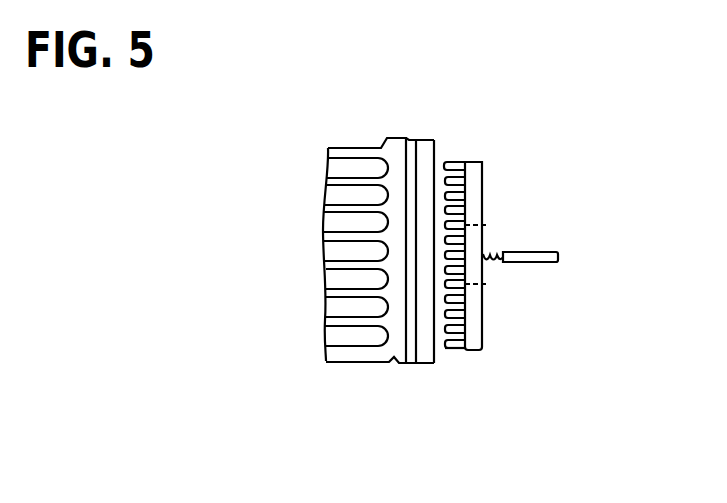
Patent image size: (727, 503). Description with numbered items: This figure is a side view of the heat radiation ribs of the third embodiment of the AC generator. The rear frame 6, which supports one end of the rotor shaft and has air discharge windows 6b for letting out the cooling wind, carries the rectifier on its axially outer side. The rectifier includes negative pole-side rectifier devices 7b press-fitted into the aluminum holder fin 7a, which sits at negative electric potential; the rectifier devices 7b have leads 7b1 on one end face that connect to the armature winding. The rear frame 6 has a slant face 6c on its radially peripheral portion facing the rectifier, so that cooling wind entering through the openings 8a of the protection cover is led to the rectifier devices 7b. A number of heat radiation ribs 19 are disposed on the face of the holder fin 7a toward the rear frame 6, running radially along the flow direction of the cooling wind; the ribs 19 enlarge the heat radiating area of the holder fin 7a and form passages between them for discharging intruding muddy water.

The rear frame 6 is at (375, 293).
The air discharge windows 6b is at (322, 345).
The slant face 6c is at (436, 365).
The holder fin 7a is at (529, 257).
The negative pole-side rectifier devices 7b is at (478, 272).
The leads 7b1 is at (542, 252).
The openings 8a is at (452, 350).
The heat radiation ribs 19 is at (453, 162).